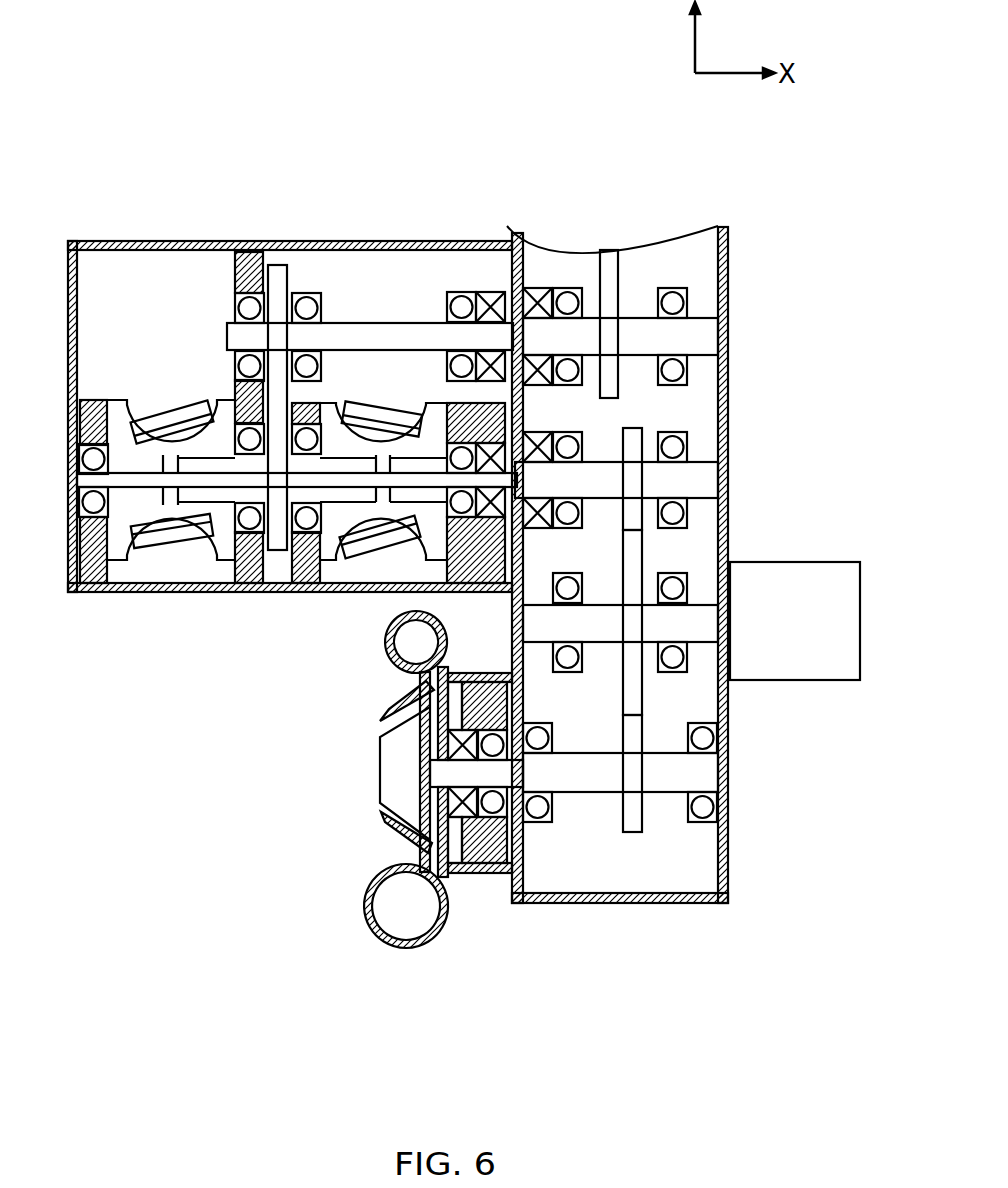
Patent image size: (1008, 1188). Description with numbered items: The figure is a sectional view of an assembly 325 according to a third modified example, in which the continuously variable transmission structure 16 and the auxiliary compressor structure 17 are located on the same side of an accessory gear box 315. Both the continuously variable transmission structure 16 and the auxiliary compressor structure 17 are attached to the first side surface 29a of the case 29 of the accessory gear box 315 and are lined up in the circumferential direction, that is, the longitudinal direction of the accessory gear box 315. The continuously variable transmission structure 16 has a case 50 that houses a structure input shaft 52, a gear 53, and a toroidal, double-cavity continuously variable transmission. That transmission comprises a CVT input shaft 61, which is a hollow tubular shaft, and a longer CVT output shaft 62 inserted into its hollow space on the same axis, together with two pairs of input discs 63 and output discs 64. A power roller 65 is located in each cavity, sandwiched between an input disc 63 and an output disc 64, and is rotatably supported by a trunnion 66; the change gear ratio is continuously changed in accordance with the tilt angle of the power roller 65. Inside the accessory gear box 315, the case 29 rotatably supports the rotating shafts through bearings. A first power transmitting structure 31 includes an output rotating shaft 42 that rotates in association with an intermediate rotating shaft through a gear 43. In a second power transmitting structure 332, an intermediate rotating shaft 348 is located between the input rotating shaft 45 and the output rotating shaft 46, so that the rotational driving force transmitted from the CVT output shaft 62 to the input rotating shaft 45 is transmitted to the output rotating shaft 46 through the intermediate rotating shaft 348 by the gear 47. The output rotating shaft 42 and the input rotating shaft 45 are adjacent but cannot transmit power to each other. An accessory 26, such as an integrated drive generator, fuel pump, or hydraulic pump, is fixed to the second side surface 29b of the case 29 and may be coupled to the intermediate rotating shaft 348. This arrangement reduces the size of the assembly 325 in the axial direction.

The continuously variable transmission structure 16 is at (92, 236).
The case 50 is at (188, 240).
The assembly 325 is at (443, 158).
The accessory gear box 315 is at (740, 287).
The case 29 is at (728, 378).
The first side surface 29a is at (513, 650).
The second side surface 29b is at (730, 727).
The structure input shaft 52 is at (430, 335).
The gear 53 is at (278, 265).
The CVT input shaft 61 is at (228, 553).
The CVT output shaft 62 is at (327, 550).
The input disc 63 is at (170, 582).
The output disc 64 is at (112, 555).
The power roller 65 is at (167, 425).
The trunnion 66 is at (185, 407).
The first power transmitting structure 31 is at (543, 162).
The output rotating shaft 42 is at (636, 330).
The gear 43 is at (604, 275).
The second power transmitting structure 332 is at (513, 978).
The input rotating shaft 45 is at (570, 598).
The intermediate rotating shaft 348 is at (605, 630).
The gear 47 is at (633, 820).
The output rotating shaft 46 is at (665, 782).
The accessory 26 is at (810, 562).
The auxiliary compressor structure 17 is at (381, 965).